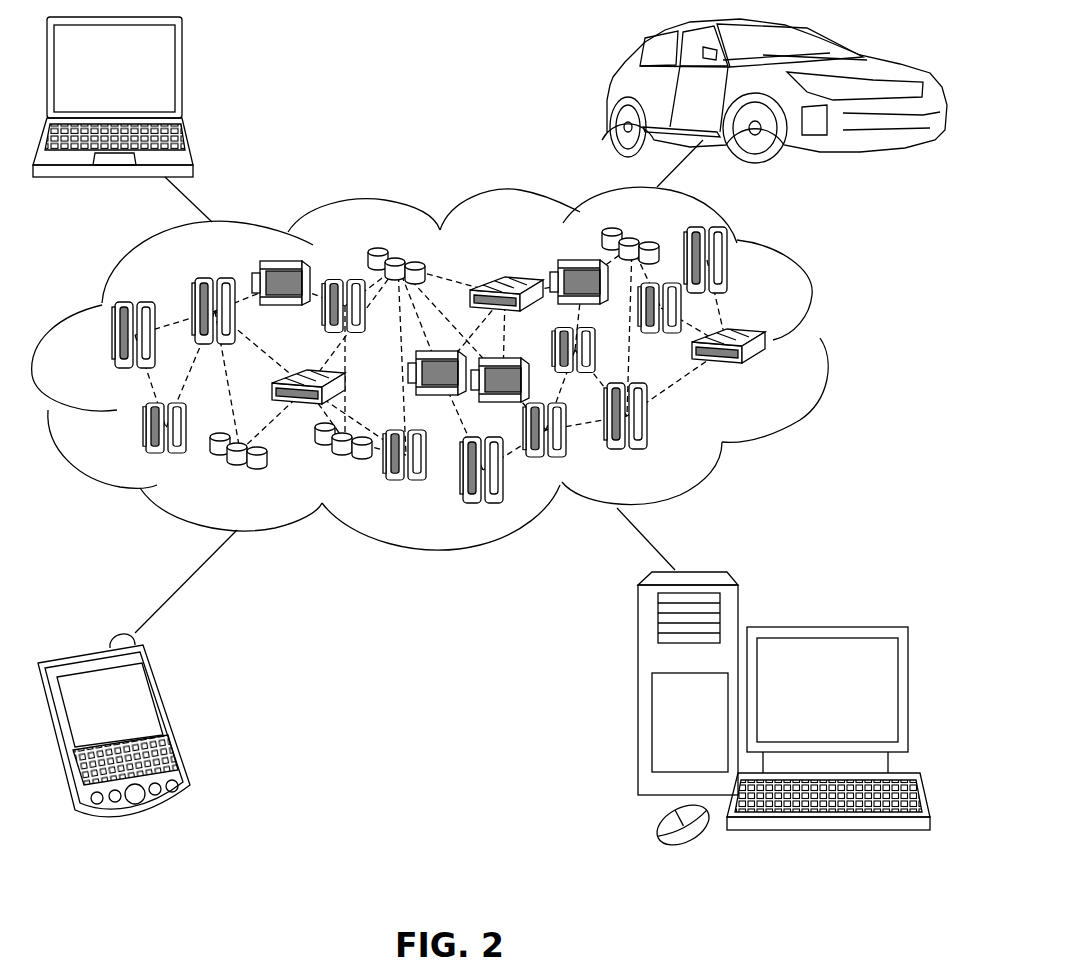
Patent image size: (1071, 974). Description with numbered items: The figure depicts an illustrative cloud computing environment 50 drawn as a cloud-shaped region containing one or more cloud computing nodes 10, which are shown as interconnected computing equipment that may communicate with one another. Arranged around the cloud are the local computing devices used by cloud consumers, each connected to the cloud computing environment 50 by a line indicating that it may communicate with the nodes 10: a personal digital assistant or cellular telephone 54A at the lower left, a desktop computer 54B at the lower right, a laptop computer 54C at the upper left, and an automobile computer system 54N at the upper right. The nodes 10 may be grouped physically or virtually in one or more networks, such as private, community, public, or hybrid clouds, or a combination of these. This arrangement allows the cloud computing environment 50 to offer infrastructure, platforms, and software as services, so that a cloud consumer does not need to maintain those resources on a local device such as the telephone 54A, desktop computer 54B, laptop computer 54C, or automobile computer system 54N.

The cloud computing nodes 10 is at (775, 376).
The cloud computing environment 50 is at (827, 347).
The personal digital assistant (PDA) or cellular telephone 54A is at (172, 719).
The desktop computer 54B is at (823, 626).
The laptop computer 54C is at (183, 78).
The automobile computer system 54N is at (608, 93).